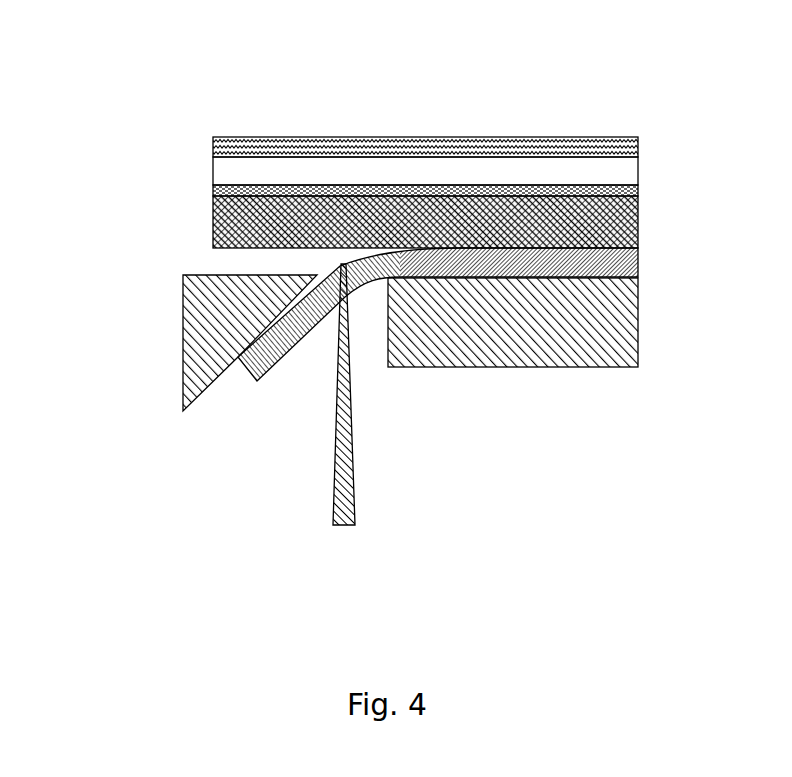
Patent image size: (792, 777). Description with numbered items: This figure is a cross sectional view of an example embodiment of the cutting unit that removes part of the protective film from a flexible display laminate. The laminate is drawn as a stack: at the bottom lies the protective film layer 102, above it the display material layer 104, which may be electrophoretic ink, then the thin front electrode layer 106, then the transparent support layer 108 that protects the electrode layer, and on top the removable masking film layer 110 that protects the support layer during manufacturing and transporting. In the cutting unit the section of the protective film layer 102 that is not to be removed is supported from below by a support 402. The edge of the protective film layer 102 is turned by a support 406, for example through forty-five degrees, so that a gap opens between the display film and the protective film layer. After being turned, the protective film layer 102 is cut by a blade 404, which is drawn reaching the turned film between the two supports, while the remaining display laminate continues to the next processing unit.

The masking film layer 110 is at (608, 138).
The support layer 108 is at (615, 175).
The front electrode layer 106 is at (637, 190).
The display material layer 104 is at (637, 238).
The protective film layer 102 is at (637, 270).
The support 402 is at (598, 367).
The blade 404 is at (355, 525).
The support 406 is at (198, 328).